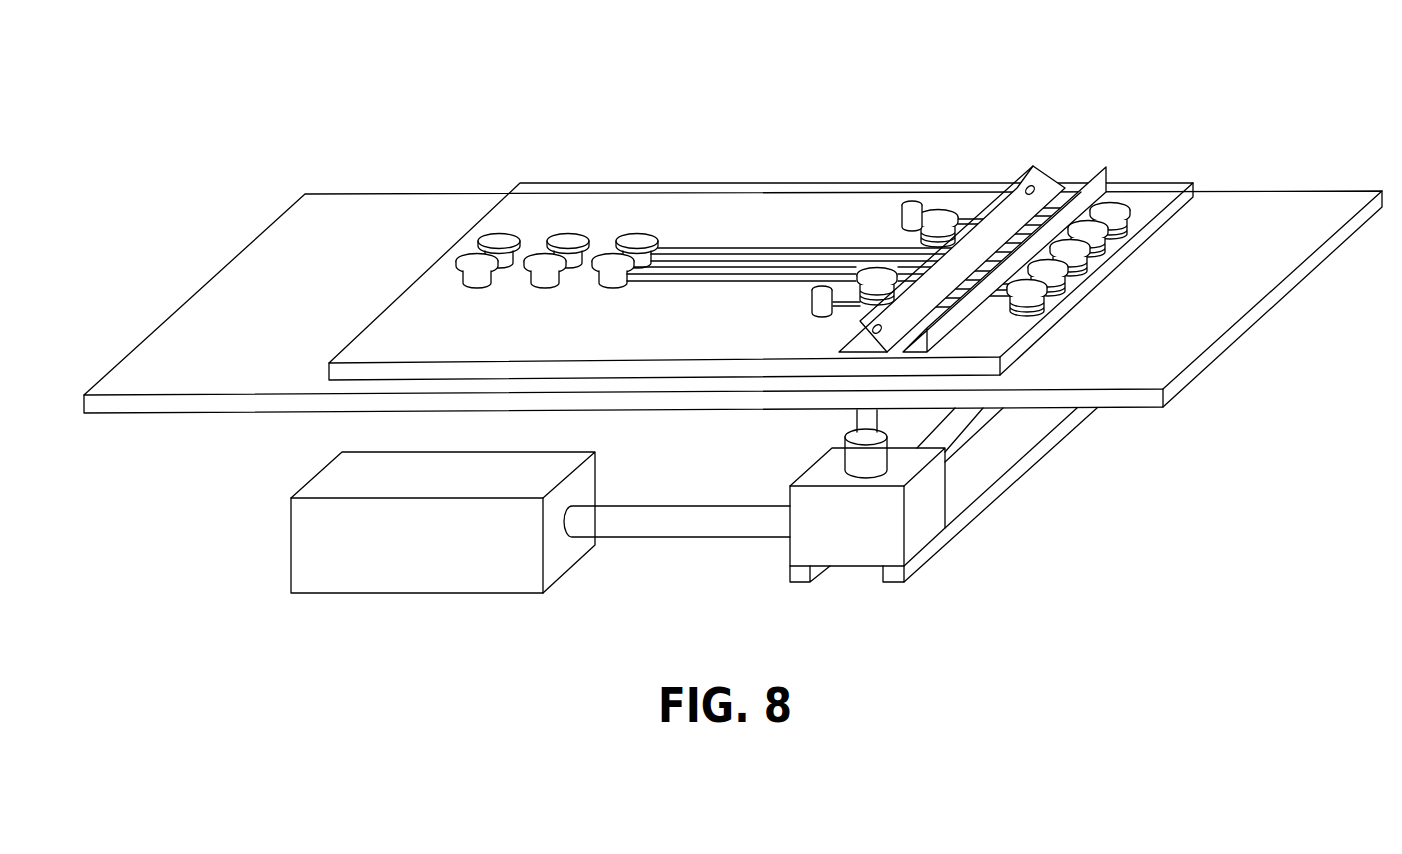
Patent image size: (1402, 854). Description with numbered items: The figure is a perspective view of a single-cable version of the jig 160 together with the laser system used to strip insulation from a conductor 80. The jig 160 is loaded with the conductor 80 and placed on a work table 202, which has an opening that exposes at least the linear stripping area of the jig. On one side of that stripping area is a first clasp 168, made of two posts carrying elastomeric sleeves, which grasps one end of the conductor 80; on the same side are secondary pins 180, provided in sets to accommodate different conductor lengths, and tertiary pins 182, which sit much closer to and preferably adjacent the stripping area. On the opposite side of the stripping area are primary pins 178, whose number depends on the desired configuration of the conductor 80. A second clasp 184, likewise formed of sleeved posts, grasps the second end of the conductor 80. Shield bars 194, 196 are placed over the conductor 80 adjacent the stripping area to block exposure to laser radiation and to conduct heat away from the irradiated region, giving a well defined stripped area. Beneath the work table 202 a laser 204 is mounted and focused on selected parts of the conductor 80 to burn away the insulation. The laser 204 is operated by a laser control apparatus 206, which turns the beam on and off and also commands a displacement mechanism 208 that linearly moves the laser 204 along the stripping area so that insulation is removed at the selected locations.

The jig 160 is at (900, 100).
The first clasp 168 is at (919, 201).
The primary pins 178 is at (1108, 229).
The secondary pins 180 is at (637, 236).
The tertiary pins 182 is at (942, 213).
The second clasp 184 is at (811, 318).
The shield bar 194 is at (1109, 172).
The shield bar 196 is at (1052, 178).
The conductor 80 is at (789, 247).
The work table 202 is at (206, 284).
The laser 204 is at (920, 530).
The laser control apparatus 206 is at (290, 548).
The displacement mechanism 208 is at (1020, 472).